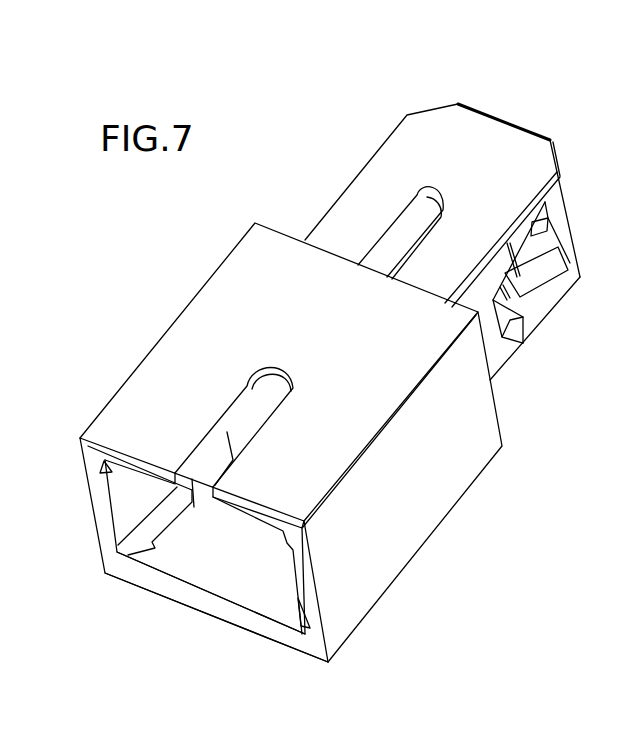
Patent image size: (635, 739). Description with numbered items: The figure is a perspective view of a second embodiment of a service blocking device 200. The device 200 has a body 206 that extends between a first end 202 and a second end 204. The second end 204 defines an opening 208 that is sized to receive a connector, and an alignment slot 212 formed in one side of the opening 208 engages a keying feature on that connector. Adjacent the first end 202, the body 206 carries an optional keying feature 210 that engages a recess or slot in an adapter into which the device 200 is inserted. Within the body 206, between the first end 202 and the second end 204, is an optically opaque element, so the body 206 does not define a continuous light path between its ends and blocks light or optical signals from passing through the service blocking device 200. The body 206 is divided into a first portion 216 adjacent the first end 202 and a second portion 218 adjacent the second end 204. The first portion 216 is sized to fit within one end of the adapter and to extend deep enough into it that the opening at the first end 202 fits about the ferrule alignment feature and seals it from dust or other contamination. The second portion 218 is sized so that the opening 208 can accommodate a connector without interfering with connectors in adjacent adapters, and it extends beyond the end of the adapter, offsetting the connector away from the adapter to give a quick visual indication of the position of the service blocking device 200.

The service blocking device 200 is at (505, 493).
The first end 202 is at (500, 118).
The second end 204 is at (203, 605).
The body 206 is at (225, 282).
The opening 208 is at (118, 616).
The keying feature 210 is at (418, 205).
The alignment slot 212 is at (248, 422).
The first portion 216 is at (510, 347).
The second portion 218 is at (380, 558).